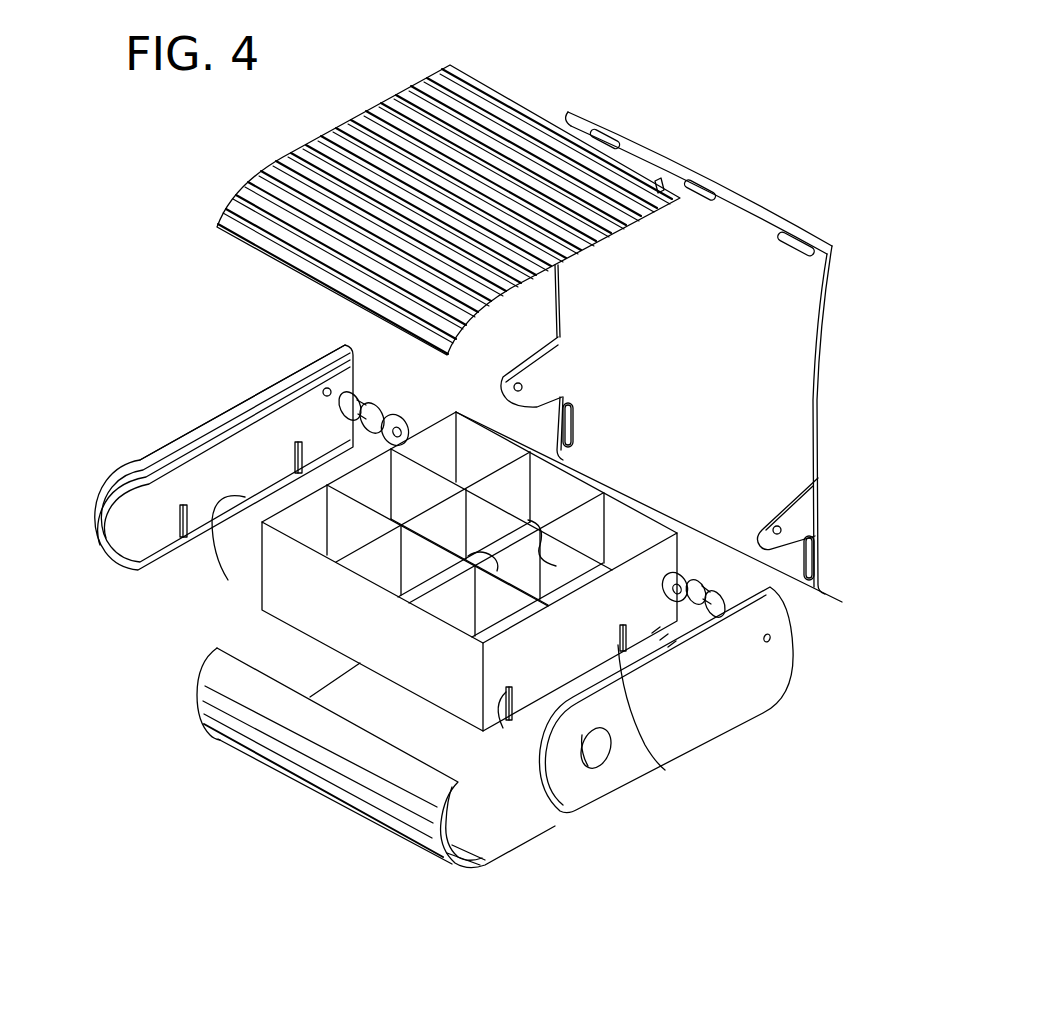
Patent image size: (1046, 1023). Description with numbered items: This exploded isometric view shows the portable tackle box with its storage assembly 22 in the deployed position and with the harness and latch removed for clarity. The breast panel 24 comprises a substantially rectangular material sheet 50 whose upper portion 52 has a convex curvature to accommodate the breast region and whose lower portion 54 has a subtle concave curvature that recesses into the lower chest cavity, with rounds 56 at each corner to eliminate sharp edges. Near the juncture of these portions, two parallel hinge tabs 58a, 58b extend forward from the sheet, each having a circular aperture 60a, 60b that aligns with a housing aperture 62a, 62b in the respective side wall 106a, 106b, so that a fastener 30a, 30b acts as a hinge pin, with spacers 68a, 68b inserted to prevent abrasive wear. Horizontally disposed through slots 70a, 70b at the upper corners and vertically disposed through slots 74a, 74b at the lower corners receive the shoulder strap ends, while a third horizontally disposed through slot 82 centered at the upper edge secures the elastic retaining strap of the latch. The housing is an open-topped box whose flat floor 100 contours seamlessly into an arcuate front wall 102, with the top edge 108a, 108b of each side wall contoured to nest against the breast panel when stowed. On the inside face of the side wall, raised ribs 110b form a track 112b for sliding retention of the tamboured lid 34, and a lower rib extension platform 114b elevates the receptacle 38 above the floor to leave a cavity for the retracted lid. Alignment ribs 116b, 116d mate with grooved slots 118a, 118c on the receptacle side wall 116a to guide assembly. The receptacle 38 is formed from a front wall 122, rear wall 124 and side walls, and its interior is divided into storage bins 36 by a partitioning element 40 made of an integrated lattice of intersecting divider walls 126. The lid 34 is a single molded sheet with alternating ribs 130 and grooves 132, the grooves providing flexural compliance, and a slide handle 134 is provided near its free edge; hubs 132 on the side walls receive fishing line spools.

The storage assembly 22 is at (693, 700).
The breast panel 24 is at (680, 348).
The fastener 30a is at (712, 612).
The fastener 30b is at (370, 408).
The tamboured lid 34 is at (443, 437).
The storage bins 36 is at (485, 522).
The receptacle 38 is at (262, 610).
The partitioning element 40 is at (446, 571).
The material sheet 50 is at (679, 348).
The upper portion 52 is at (713, 180).
The lower portion 54 is at (722, 530).
The rounds 56 is at (590, 112).
The hinge tab 58a is at (824, 512).
The hinge tab 58b is at (568, 359).
The circular aperture 60a is at (781, 530).
The circular aperture 60b is at (518, 383).
The housing aperture 62a is at (770, 640).
The housing aperture 62b is at (331, 390).
The spacer 68a is at (668, 602).
The spacer 68b is at (400, 428).
The horizontally disposed through slot 70a is at (818, 224).
The horizontally disposed through slot 70b is at (615, 140).
The vertically disposed through slot 74a is at (812, 565).
The vertically disposed through slot 74b is at (573, 418).
The third horizontally disposed through slot 82 is at (708, 190).
The floor 100 is at (391, 761).
The arcuate front wall 102 is at (300, 760).
The side wall 106a is at (720, 745).
The side wall 106b is at (222, 463).
The top edge 108a is at (690, 733).
The top edge 108b is at (260, 388).
The raised ribs 110b is at (305, 372).
The track 112b is at (352, 347).
The lower rib extension platform 114b is at (228, 568).
The receptacle side wall 116a is at (538, 660).
The alignment rib 116b is at (180, 515).
The alignment rib 116d is at (290, 445).
The grooved slot 118a is at (507, 722).
The grooved slot 118c is at (645, 642).
The front wall 122 is at (352, 637).
The rear wall 124 is at (648, 538).
The divider walls 126 is at (555, 566).
The ribs 130 is at (365, 137).
The grooves 132 is at (293, 168).
The slide handle 134 is at (512, 98).